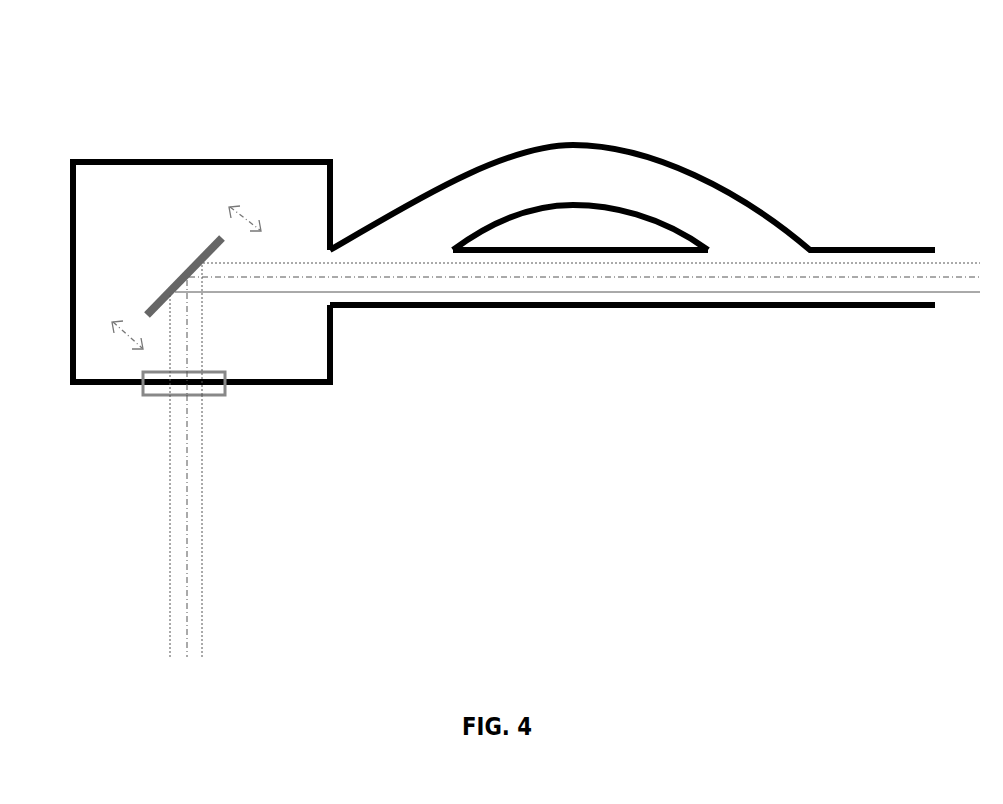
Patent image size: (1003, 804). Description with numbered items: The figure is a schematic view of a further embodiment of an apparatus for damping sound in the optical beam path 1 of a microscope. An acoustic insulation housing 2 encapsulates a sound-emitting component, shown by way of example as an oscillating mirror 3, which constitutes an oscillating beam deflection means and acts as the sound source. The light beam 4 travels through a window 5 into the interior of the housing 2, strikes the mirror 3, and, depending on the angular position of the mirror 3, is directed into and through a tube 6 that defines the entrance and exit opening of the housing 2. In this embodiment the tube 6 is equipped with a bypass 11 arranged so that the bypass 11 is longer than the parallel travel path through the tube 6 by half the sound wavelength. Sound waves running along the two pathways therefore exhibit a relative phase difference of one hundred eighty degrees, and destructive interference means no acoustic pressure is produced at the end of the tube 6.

The optical beam path 1 is at (193, 593).
The acoustic insulation housing 2 is at (222, 160).
The oscillating mirror 3 is at (176, 263).
The light beam 4 is at (171, 478).
The window 5 is at (205, 397).
The tube 6 is at (502, 308).
The bypass 11 is at (567, 145).